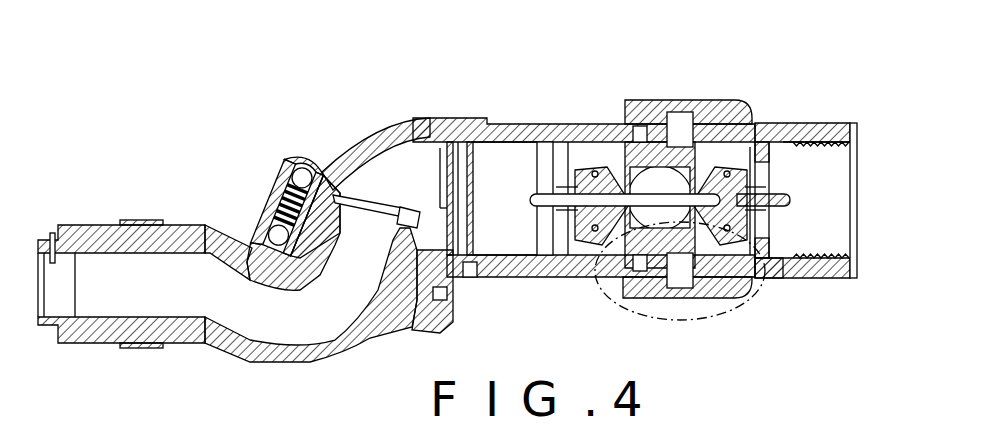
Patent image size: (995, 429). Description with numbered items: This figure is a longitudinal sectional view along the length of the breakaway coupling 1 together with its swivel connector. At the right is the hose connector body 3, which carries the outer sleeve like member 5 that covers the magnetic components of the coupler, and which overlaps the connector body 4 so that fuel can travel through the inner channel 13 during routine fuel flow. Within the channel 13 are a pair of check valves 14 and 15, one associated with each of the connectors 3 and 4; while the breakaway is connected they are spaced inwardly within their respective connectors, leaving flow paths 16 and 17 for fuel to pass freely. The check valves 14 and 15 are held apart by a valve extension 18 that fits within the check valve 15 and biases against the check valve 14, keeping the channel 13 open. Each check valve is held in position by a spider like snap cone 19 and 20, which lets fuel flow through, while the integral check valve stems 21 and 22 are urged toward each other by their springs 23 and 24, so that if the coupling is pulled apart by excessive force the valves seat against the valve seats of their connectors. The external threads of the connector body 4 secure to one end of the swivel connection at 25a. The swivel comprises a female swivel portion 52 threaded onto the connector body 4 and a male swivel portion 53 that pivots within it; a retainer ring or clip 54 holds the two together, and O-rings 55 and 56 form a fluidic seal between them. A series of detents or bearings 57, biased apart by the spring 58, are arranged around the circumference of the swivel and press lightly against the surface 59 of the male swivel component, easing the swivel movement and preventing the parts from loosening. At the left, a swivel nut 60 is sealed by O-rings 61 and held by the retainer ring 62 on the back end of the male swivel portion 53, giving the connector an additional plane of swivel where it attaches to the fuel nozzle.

The breakaway coupling 1 is at (656, 68).
The connector body 3 is at (859, 127).
The connector body 4 is at (533, 123).
The outer sleeve like member 5 is at (690, 100).
The inner channel 13 is at (508, 182).
The check valve 14 is at (622, 160).
The check valve 15 is at (727, 168).
The flow path 16 is at (607, 247).
The flow path 17 is at (763, 258).
The valve extension 18 is at (625, 250).
The snap cone 19 is at (560, 228).
The snap cone 20 is at (760, 230).
The check valve stem 21 is at (542, 206).
The check valve stem 22 is at (770, 190).
The spring 23 is at (560, 183).
The spring 24 is at (767, 194).
The swivel connection securement end 25a is at (490, 117).
The female swivel portion 52 is at (400, 119).
The male swivel portion 53 is at (190, 225).
The retainer ring or clip 54 is at (320, 177).
The O-ring 55 is at (338, 240).
The O-ring 56 is at (398, 243).
The detents or bearings 57 is at (262, 230).
The spring 58 is at (280, 240).
The surface of the male swivel component 59 is at (248, 235).
The swivel nut 60 is at (65, 225).
The O-rings 61 is at (152, 224).
The retainer ring 62 is at (48, 240).